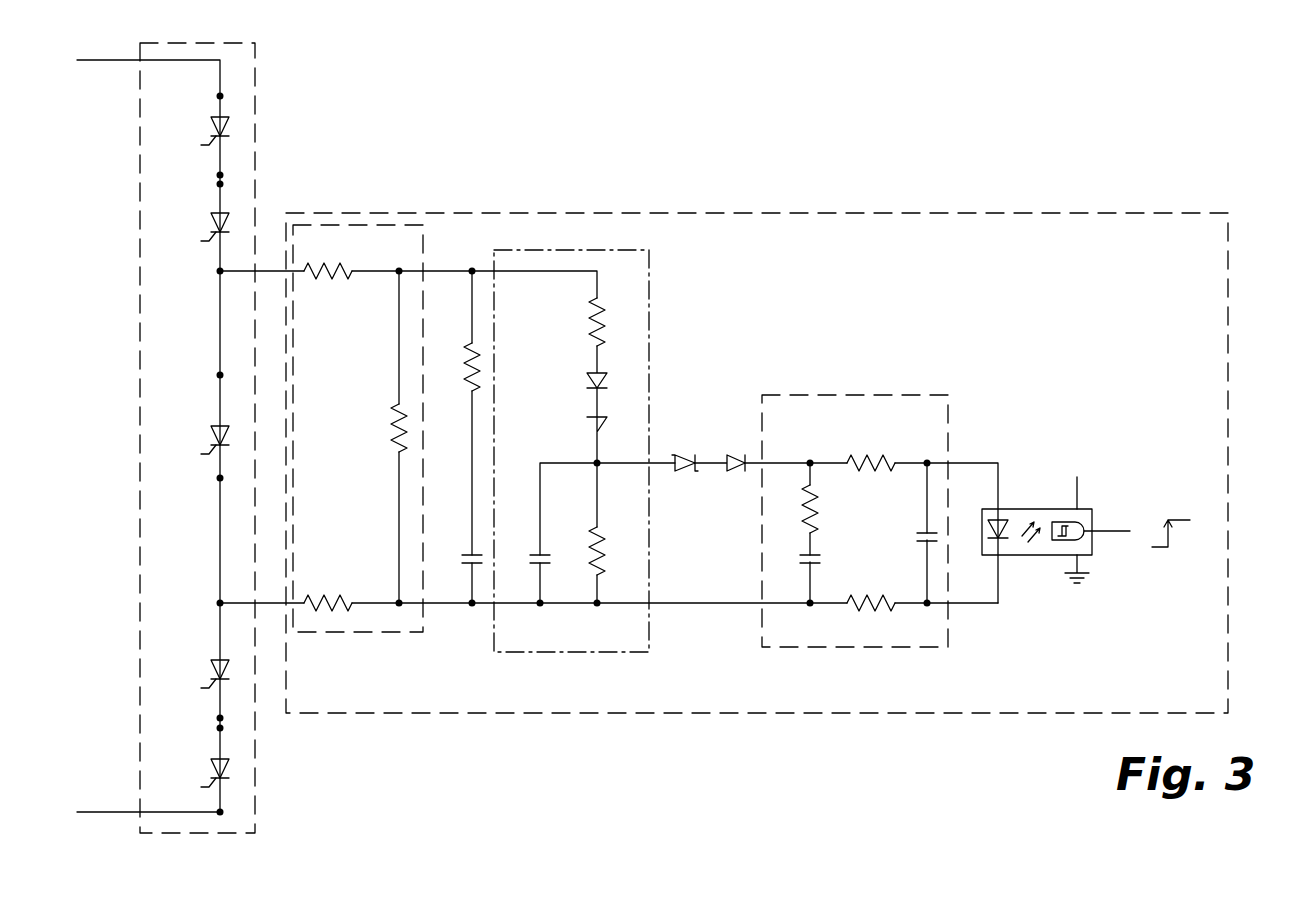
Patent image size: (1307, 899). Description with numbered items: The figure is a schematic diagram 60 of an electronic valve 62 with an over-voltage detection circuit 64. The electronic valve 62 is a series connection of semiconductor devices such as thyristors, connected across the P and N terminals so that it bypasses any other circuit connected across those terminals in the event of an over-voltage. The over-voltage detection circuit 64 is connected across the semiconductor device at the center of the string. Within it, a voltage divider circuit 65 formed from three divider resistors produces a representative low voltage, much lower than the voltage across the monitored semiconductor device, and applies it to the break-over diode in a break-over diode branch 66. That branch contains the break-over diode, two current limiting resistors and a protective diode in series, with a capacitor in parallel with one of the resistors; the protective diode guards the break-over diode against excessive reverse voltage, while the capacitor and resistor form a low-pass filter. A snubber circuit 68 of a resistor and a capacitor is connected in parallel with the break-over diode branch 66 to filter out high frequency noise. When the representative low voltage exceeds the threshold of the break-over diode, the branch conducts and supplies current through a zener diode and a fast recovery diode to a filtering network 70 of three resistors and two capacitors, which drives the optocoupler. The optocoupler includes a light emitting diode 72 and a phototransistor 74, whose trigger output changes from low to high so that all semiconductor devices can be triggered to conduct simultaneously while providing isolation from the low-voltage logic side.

The schematic diagram 60 is at (1252, 96).
The electronic valve 62 is at (257, 110).
The over-voltage detection circuit 64 is at (506, 212).
The voltage divider circuit 65 is at (397, 222).
The break-over diode branch 66 is at (651, 277).
The snubber circuit 68 is at (472, 462).
The filtering network 70 is at (920, 395).
The light emitting diode 72 is at (996, 526).
The phototransistor 74 is at (1052, 526).